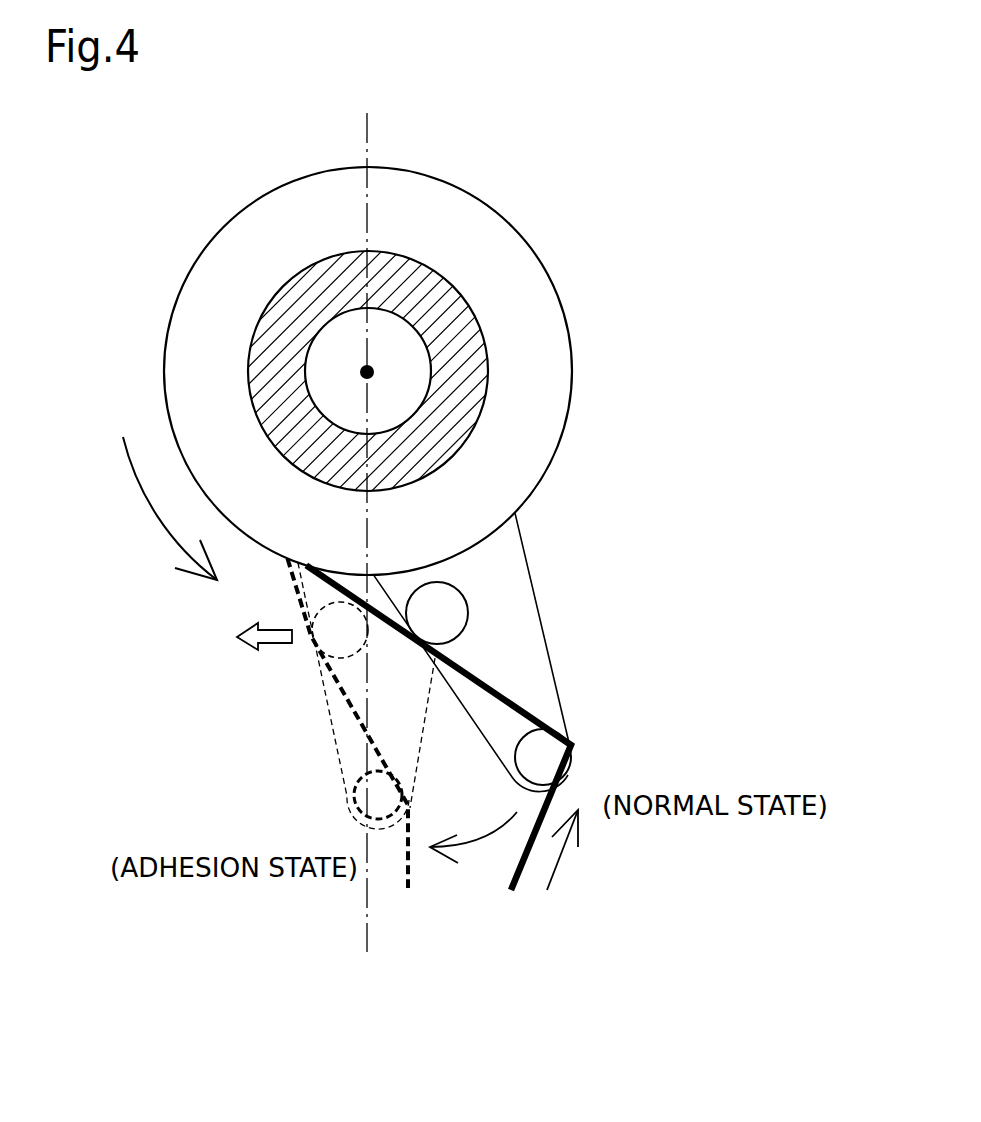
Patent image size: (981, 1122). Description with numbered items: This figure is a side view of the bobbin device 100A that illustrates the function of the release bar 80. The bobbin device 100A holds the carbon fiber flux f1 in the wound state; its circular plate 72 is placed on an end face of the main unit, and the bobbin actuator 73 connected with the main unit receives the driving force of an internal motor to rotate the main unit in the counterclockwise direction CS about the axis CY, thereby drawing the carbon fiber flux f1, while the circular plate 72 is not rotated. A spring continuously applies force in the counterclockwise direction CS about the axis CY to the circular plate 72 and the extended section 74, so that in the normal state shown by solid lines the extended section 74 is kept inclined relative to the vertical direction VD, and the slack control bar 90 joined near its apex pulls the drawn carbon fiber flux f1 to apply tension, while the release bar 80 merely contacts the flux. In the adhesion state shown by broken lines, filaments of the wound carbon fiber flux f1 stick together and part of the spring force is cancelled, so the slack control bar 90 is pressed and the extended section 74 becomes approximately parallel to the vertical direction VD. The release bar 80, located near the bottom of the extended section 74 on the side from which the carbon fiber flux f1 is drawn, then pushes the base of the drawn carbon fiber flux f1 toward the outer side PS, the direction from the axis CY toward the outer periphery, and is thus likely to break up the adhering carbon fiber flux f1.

The bobbin device 100A is at (590, 208).
The circular plate 72 is at (572, 372).
The bobbin actuator 73 is at (440, 325).
The extended section 74 is at (533, 665).
The release bar 80 is at (468, 597).
The slack control bar 90 is at (545, 757).
The axis of the main unit CY is at (367, 373).
The counterclockwise direction CS is at (164, 508).
The outer side PS is at (264, 622).
The vertical direction VD is at (367, 552).
The carbon fiber flux f1 is at (488, 868).